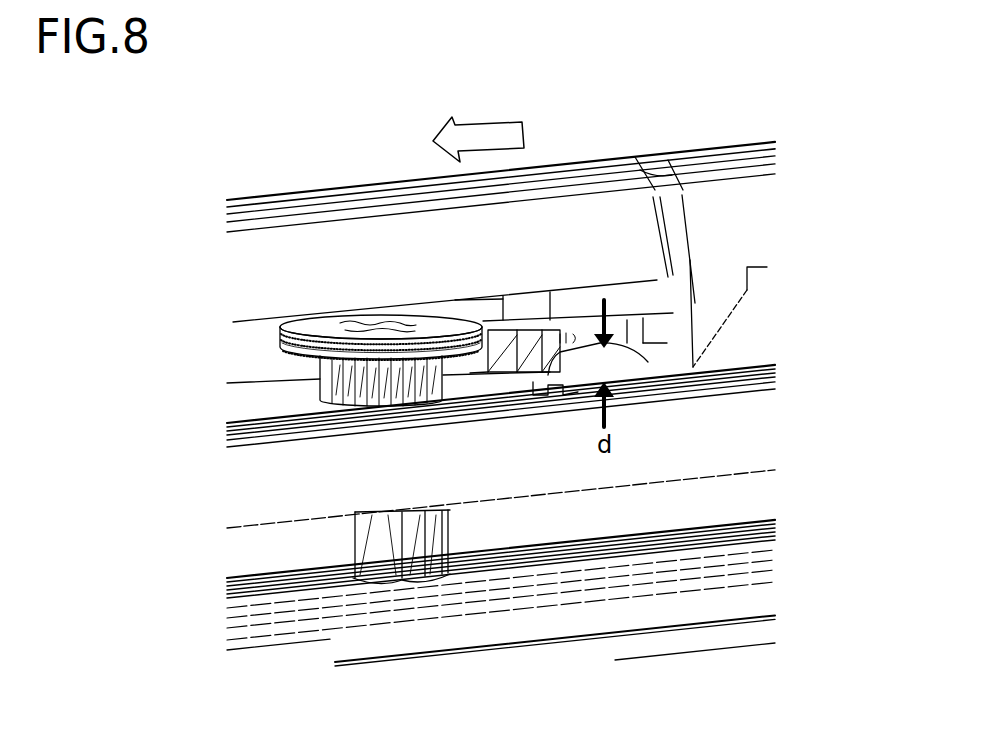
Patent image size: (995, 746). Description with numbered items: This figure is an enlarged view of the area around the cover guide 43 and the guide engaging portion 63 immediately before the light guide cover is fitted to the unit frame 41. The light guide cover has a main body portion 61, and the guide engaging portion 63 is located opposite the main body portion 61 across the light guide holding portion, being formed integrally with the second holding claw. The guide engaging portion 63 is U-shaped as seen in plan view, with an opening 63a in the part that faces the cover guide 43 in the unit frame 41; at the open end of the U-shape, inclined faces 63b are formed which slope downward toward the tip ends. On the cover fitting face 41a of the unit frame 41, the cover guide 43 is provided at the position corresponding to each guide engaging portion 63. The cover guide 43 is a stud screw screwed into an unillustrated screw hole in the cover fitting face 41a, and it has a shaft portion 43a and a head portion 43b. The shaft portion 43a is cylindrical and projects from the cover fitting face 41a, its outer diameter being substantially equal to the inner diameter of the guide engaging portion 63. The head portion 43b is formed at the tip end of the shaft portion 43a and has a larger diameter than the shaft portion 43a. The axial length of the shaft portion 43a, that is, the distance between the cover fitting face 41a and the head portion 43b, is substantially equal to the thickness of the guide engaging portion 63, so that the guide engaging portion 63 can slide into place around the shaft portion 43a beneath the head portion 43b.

The main body portion 61 is at (767, 198).
The cover fitting face 41a is at (760, 356).
The unit frame 41 is at (767, 448).
The cover guide 43 is at (282, 449).
The shaft portion 43a is at (320, 396).
The head portion 43b is at (280, 348).
The guide engaging portion 63 is at (557, 408).
The opening 63a is at (478, 384).
The inclined faces 63b is at (558, 357).